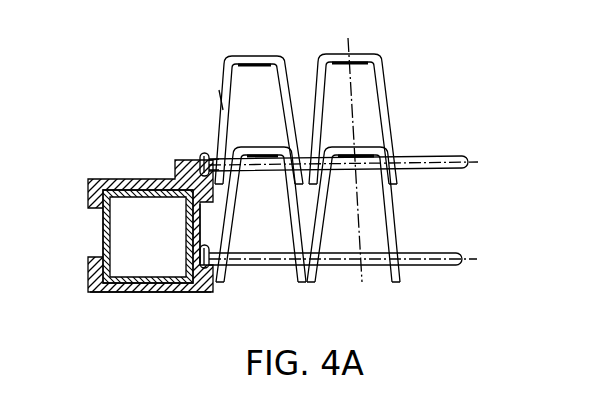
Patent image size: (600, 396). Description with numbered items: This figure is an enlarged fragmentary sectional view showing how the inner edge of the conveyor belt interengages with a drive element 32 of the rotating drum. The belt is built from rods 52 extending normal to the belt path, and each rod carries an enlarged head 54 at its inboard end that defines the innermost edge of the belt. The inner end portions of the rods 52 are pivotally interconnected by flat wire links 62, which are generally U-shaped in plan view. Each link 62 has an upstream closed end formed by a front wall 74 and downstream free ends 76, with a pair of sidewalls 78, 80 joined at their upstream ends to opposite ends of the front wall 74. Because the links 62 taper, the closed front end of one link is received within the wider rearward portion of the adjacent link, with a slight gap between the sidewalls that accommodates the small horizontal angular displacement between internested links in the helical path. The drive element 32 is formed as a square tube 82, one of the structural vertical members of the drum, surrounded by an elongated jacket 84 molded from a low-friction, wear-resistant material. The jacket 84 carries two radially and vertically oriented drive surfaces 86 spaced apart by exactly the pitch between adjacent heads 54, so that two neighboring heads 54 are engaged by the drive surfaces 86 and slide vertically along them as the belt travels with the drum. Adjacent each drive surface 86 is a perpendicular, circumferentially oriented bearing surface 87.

The drive element 32 is at (155, 233).
The rod 52 is at (417, 252).
The enlarged head 54 is at (212, 160).
The link 62 is at (333, 146).
The front wall 74 is at (238, 104).
The free ends 76 is at (298, 273).
The sidewall 78 is at (220, 103).
The sidewall 80 is at (288, 70).
The square tube 82 is at (100, 236).
The jacket 84 is at (141, 293).
The drive surface 86 is at (203, 154).
The bearing surface 87 is at (200, 227).